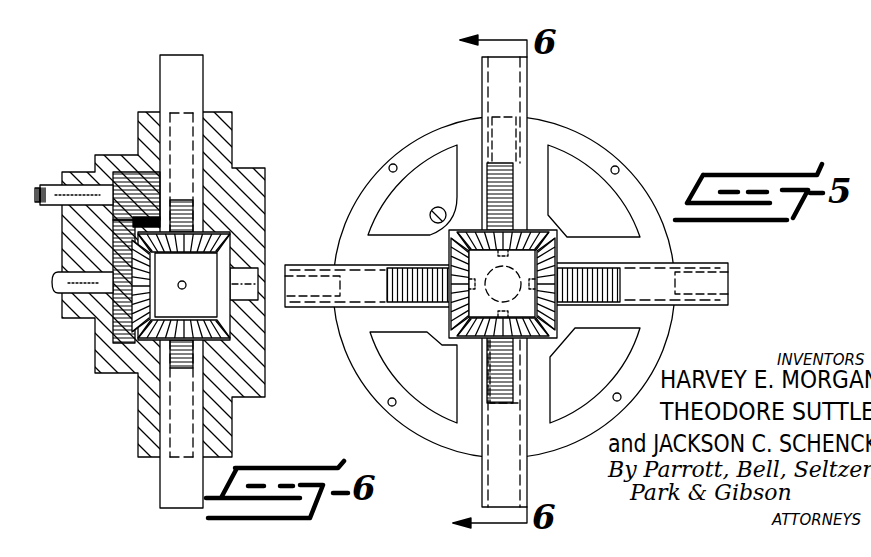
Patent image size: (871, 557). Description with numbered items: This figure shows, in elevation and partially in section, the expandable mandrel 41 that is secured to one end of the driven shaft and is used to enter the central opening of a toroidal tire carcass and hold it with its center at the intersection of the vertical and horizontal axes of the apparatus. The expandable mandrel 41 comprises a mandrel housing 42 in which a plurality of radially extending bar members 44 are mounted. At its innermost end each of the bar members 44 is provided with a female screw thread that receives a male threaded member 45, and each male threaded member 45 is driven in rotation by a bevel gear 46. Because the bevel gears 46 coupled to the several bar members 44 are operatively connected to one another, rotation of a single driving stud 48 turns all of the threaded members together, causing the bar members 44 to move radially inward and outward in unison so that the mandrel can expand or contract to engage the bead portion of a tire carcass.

In FIG. 6, the expandable mandrel 41 is at (166, 280).
In FIG. 5, the expandable mandrel 41 is at (527, 282).
In FIG. 6, the mandrel housing 42 is at (232, 118).
In FIG. 5, the mandrel housing 42 is at (576, 125).
In FIG. 6, the bar members 44 is at (193, 72).
In FIG. 5, the bar members 44 is at (527, 282).
In FIG. 5, the male threaded member 45 is at (510, 186).
In FIG. 6, the bevel gear 46 is at (136, 338).
In FIG. 5, the bevel gear 46 is at (520, 250).
In FIG. 6, the driving stud 48 is at (30, 190).